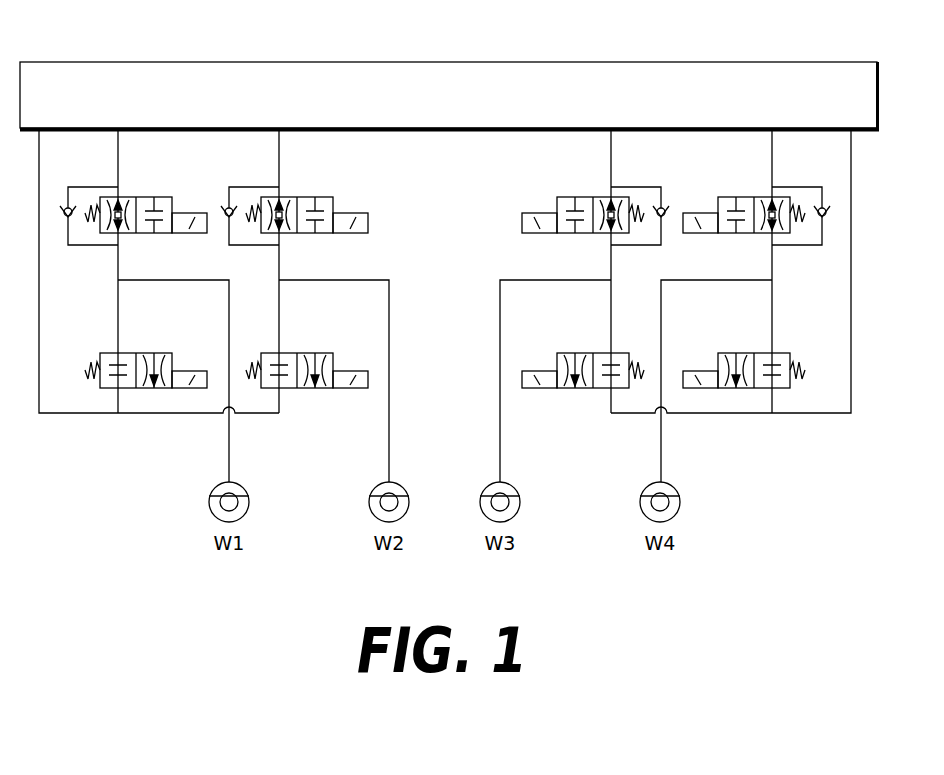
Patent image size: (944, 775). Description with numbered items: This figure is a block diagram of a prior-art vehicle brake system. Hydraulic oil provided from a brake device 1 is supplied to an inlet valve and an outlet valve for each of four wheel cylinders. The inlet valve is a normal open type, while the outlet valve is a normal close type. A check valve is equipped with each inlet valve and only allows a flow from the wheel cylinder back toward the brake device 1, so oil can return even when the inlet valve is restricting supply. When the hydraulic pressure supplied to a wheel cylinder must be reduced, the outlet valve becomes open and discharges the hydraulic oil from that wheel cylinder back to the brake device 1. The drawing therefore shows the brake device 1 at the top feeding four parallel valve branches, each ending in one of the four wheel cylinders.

The brake device 1 is at (553, 62).